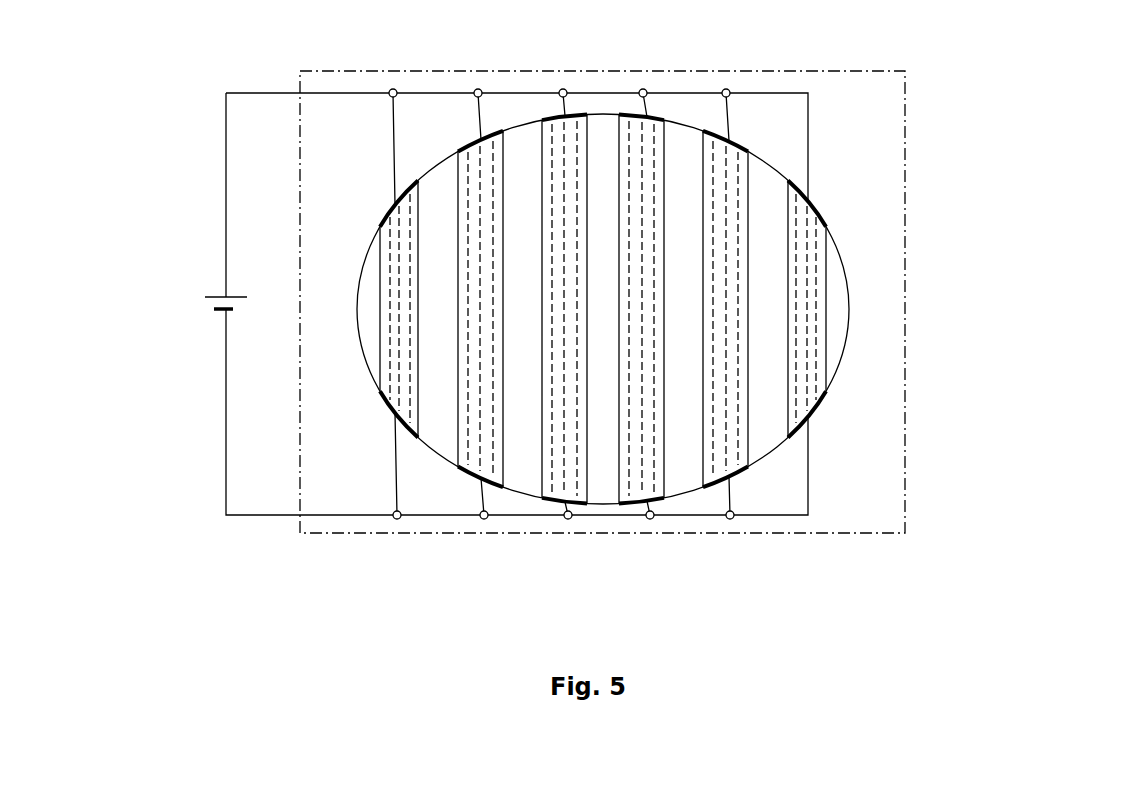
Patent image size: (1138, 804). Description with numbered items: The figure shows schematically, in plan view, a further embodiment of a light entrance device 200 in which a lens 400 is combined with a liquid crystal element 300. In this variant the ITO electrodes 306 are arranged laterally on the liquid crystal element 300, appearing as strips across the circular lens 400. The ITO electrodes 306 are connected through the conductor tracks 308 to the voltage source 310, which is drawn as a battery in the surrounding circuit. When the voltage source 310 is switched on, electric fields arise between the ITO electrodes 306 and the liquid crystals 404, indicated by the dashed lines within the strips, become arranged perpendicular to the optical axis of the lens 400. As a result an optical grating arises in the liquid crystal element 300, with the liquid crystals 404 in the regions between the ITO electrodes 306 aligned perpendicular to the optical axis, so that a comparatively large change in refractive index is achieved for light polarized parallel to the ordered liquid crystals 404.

The light entrance device 200 is at (970, 103).
The liquid crystal element 300 is at (848, 313).
The ITO electrodes 306 is at (820, 205).
The conductor tracks 308 is at (270, 518).
The voltage source 310 is at (212, 305).
The lens 400 is at (763, 422).
The liquid crystals 404 is at (493, 441).